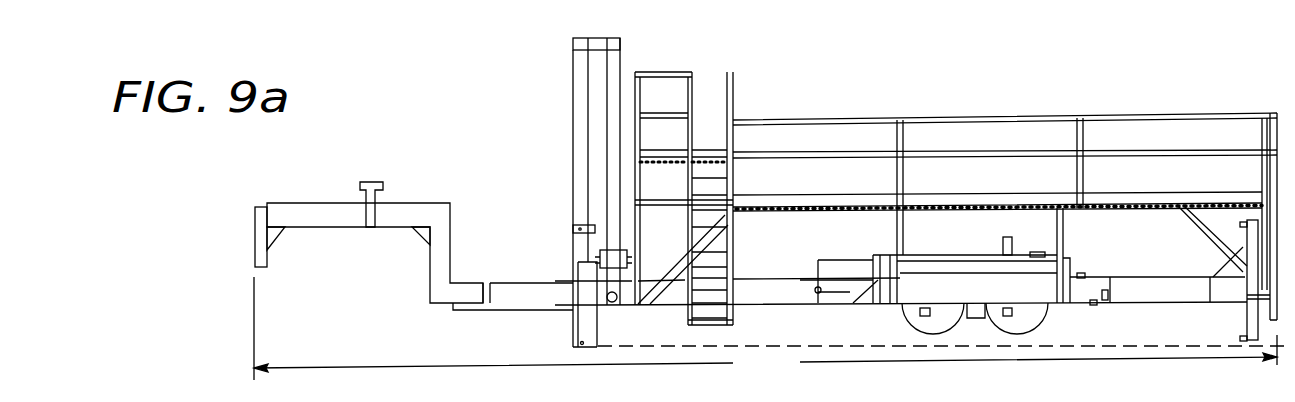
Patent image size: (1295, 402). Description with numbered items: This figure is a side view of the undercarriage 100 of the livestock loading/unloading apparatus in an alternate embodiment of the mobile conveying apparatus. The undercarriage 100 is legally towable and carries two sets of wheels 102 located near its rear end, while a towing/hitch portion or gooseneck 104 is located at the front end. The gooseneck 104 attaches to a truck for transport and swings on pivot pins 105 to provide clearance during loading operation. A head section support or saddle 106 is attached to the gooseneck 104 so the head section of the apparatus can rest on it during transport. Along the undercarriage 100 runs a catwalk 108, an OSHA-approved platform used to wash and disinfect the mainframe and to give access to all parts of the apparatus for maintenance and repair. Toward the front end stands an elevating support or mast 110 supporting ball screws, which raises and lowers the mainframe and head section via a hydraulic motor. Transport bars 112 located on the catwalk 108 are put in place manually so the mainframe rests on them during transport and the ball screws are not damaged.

The undercarriage 100 is at (765, 328).
The wheels 102 is at (943, 333).
The gooseneck 104 is at (310, 203).
The pivot pins 105 is at (486, 283).
The saddle 106 is at (373, 182).
The catwalk 108 is at (828, 117).
The mast 110 is at (620, 60).
The transport bars 112 is at (628, 199).